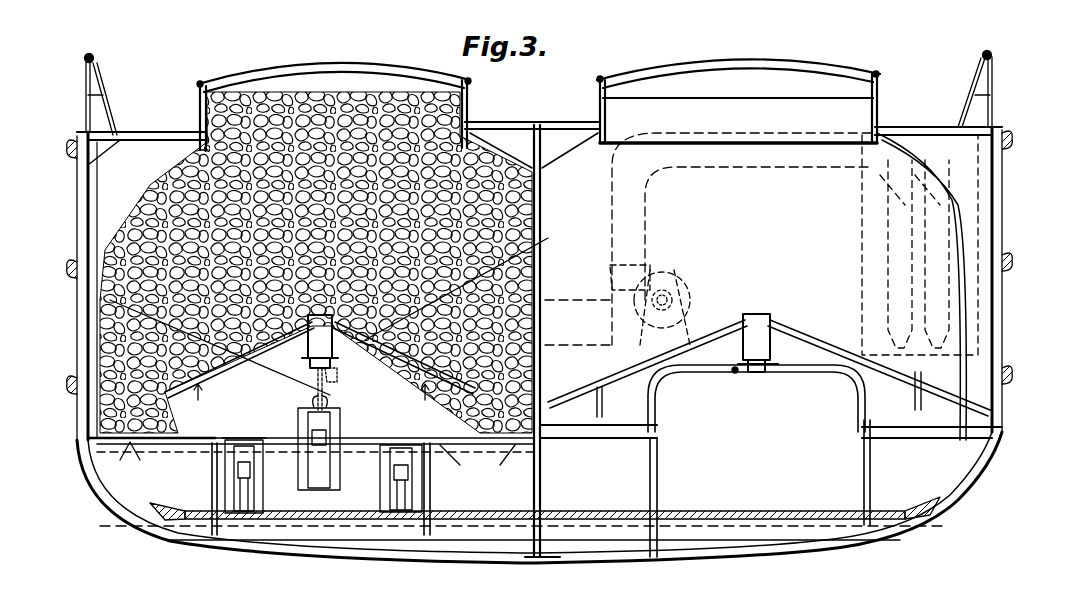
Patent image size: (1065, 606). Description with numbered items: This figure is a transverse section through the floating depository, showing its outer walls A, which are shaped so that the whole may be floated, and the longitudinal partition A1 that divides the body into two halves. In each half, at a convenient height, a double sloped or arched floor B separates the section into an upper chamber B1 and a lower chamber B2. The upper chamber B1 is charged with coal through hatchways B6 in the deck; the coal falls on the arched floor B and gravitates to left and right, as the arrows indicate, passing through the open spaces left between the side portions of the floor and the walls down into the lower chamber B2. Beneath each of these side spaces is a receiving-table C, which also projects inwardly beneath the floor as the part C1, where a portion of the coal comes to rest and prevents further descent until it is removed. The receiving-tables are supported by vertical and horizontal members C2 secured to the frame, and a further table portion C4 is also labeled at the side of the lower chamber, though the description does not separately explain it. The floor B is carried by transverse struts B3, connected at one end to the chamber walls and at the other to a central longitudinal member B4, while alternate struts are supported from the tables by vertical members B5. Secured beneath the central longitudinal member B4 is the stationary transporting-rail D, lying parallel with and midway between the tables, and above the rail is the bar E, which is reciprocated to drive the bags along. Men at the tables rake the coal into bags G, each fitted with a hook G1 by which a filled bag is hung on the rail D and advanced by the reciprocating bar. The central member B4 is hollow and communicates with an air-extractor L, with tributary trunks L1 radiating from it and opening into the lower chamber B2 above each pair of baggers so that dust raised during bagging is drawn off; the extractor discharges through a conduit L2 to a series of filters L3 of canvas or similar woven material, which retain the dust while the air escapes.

The outer walls A is at (88, 230).
The partition A1 is at (540, 220).
The double sloped or arched floor B is at (712, 282).
The upper chamber B1 is at (200, 160).
The lower chamber B2 is at (395, 390).
The transverse struts B3 is at (640, 375).
The central longitudinal member B4 is at (770, 316).
The vertical members B5 is at (96, 372).
The hatchways B6 is at (222, 90).
The receiving-table C is at (152, 443).
The inward projection of receiving-table C1 is at (210, 448).
The vertical and horizontal members C2 is at (185, 500).
The deck stringer C4 is at (100, 444).
The transporting-rail D is at (316, 388).
The bar E is at (308, 370).
The bags G is at (308, 448).
The hook G1 is at (338, 376).
The air-extractor L is at (640, 316).
The tributary trunks L1 is at (110, 300).
The conduit L2 is at (642, 165).
The filters L3 is at (885, 212).